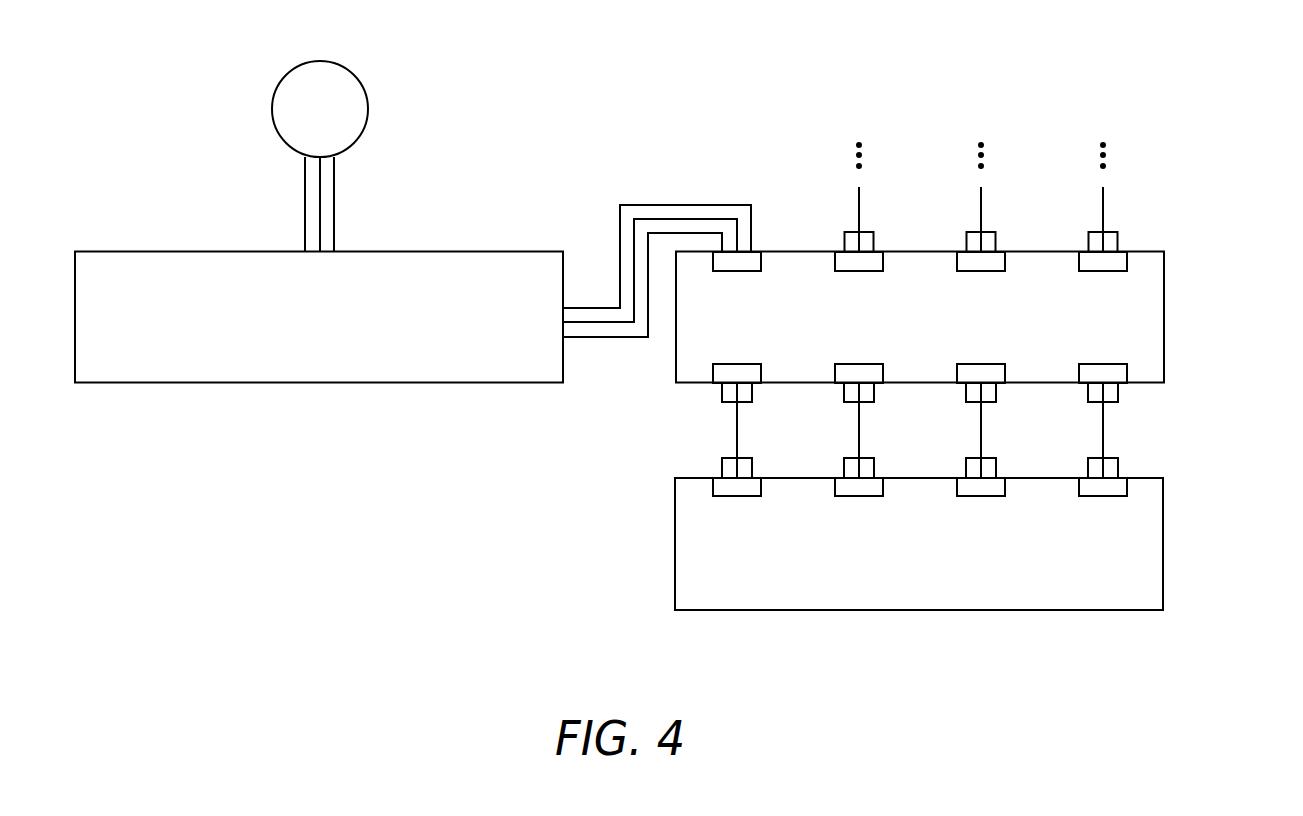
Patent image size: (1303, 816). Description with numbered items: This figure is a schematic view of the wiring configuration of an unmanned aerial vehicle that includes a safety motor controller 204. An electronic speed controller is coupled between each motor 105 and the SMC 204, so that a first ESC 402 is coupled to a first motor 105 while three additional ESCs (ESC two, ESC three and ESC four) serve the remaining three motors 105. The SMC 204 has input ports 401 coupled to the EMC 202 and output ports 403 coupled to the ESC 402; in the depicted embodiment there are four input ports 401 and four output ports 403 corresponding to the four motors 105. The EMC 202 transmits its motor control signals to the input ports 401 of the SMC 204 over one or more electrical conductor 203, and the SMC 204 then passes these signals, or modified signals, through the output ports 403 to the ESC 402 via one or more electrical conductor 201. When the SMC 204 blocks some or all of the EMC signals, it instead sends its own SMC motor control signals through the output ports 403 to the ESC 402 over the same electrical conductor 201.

The motor 105 is at (320, 62).
The first ESC 402 is at (465, 251).
The electrical conductor 201 is at (694, 188).
The safety motor controller 204 is at (1164, 310).
The output port 403 is at (737, 271).
The input port 401 is at (737, 365).
The electrical conductor 203 is at (1150, 416).
The EMC 202 is at (1163, 535).